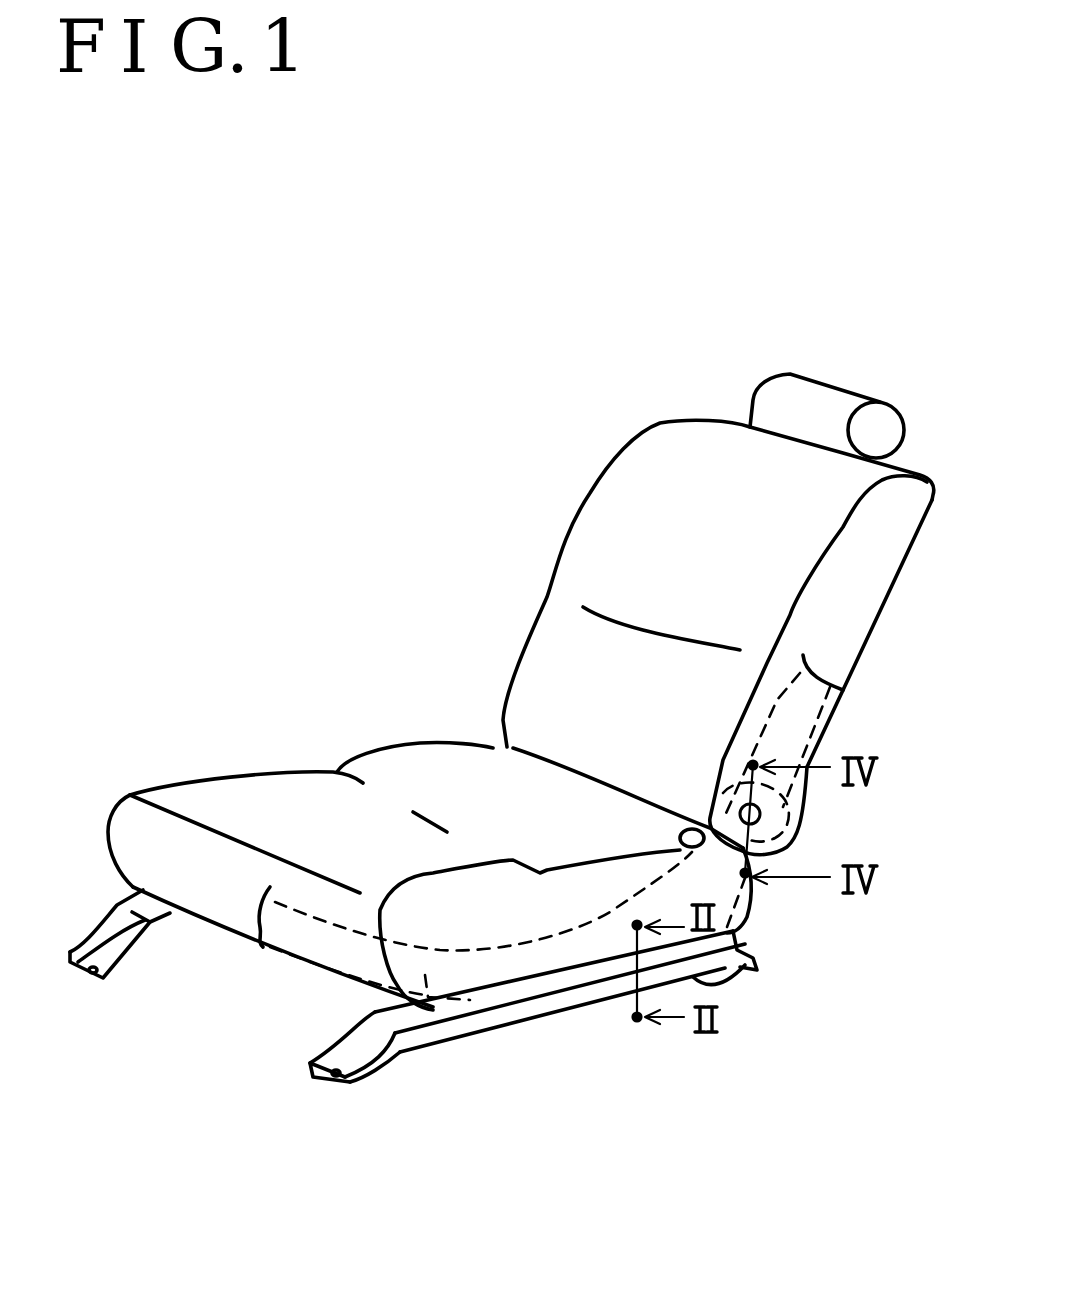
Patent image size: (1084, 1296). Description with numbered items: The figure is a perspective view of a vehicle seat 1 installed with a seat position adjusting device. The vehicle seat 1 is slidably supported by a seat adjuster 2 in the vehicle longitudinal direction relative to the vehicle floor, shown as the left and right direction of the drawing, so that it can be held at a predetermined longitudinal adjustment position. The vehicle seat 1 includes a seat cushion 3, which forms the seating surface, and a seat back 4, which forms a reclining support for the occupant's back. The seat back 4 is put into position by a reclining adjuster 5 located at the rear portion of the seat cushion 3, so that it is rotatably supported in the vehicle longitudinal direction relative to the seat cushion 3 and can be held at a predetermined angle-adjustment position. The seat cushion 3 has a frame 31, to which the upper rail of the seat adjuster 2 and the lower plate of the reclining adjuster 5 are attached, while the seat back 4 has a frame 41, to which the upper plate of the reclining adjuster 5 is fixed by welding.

The vehicle seat 1 is at (530, 443).
The seat adjuster 2 is at (557, 1023).
The seat cushion 3 is at (300, 797).
The frame of the seat cushion 31 is at (490, 967).
The seat back 4 is at (708, 440).
The frame of the seat back 41 is at (797, 720).
The reclining adjuster 5 is at (779, 818).